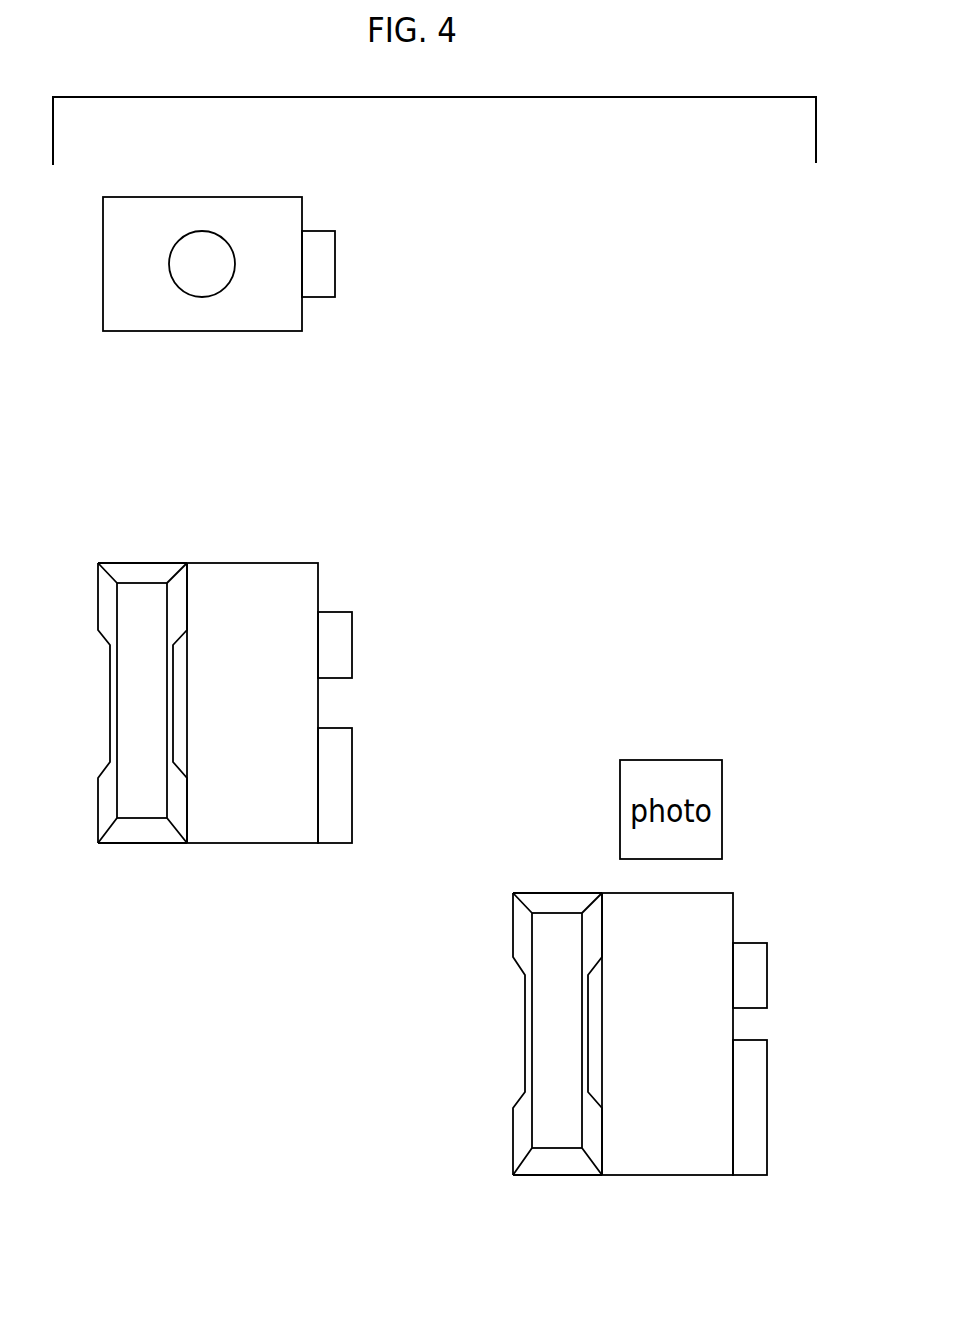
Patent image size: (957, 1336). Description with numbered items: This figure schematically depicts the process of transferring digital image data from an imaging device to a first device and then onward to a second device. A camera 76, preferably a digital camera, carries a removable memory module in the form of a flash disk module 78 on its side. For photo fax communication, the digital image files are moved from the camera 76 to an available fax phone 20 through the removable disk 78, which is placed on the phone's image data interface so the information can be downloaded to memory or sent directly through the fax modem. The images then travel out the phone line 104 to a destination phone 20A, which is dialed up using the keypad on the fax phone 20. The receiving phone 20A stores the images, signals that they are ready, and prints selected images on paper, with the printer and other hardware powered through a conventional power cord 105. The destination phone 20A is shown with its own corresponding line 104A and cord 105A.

The camera 76 is at (252, 197).
The flash disk module 78 is at (335, 262).
The fax phone 20 is at (284, 631).
The phone line 104 is at (85, 462).
The power cord 105 is at (383, 562).
The destination phone 20A is at (622, 966).
The photo cartridge nut 104A is at (518, 792).
The photo cartridge fittings 105A is at (803, 861).